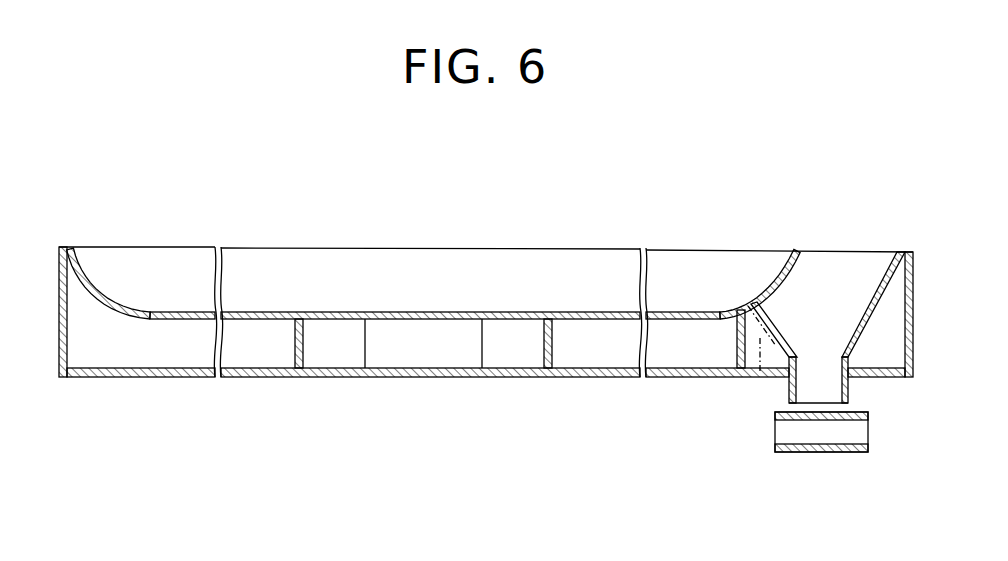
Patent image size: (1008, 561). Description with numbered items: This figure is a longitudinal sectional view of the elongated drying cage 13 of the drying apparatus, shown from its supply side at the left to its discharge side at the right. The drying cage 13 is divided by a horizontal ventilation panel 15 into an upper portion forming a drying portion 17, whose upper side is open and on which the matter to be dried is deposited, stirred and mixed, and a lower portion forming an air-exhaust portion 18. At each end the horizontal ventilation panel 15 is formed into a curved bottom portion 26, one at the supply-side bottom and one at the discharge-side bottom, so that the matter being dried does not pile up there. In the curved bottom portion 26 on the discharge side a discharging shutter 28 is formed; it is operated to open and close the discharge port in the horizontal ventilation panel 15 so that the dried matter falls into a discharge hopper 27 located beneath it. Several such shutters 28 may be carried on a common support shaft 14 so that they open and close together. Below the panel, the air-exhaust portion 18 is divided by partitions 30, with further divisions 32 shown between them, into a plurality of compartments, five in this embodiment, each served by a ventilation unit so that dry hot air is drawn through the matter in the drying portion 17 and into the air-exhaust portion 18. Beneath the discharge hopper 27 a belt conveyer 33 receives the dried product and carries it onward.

The drying cage 13 is at (534, 245).
The common support shaft 14 is at (742, 305).
The horizontal ventilation panel 15 is at (370, 312).
The drying portion 17 is at (465, 289).
The air-exhaust portion 18 is at (606, 356).
The curved bottom portion 26 is at (91, 268).
The discharge hopper 27 is at (873, 322).
The discharging shutter 28 is at (788, 290).
The partitions 30 is at (303, 353).
The partition 32 is at (365, 353).
The belt conveyer 33 is at (825, 452).